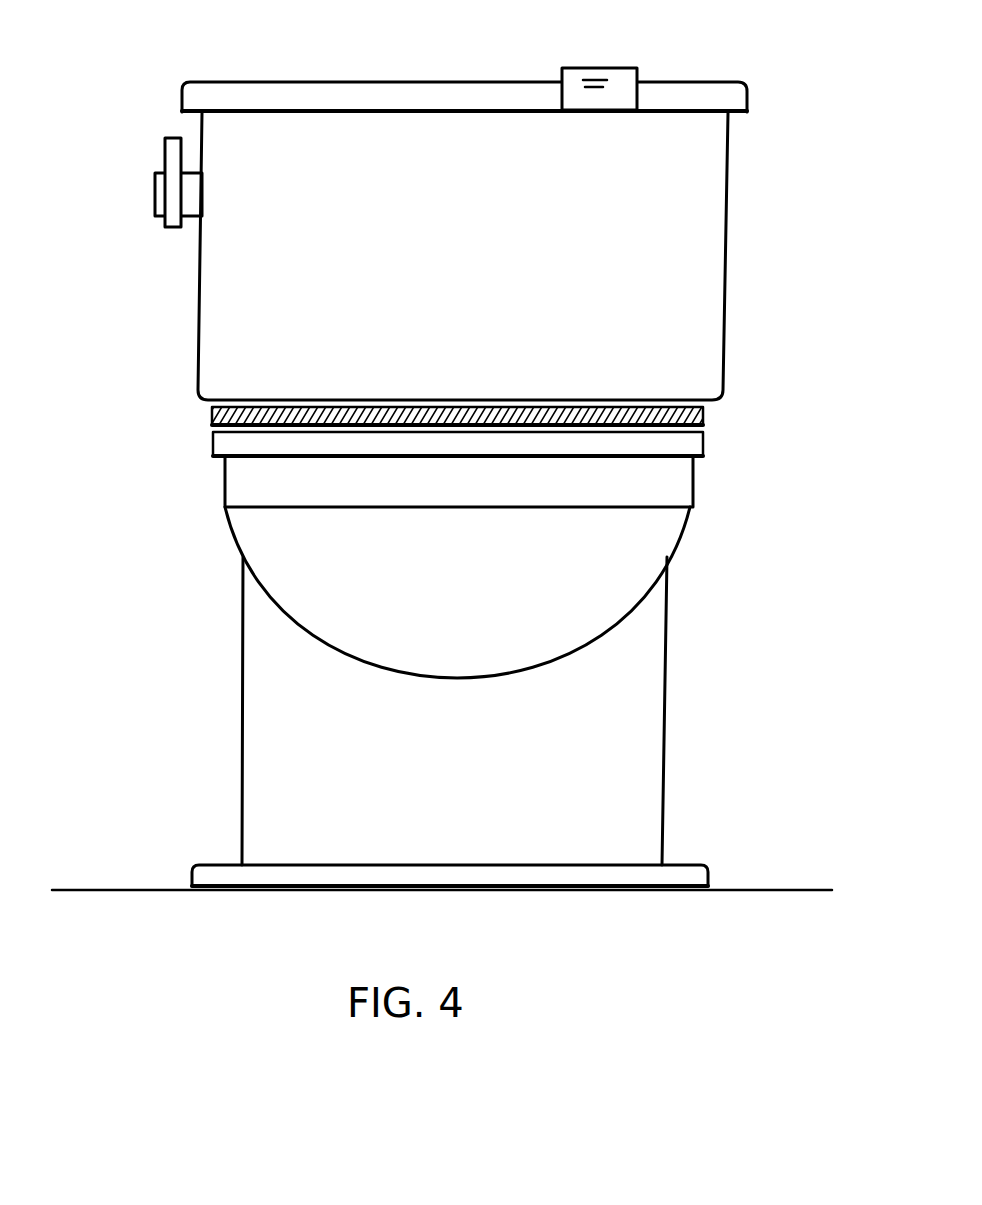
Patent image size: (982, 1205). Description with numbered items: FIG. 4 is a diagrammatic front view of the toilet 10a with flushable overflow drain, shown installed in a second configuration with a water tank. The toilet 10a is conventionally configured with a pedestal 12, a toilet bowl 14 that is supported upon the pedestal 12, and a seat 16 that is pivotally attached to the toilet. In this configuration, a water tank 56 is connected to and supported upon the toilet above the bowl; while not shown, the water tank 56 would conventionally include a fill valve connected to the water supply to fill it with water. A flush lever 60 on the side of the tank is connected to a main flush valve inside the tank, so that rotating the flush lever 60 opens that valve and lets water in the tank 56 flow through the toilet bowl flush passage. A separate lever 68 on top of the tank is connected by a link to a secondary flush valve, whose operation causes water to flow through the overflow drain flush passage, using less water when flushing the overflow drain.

The toilet with flushable overflow drain 10a is at (417, 443).
The pedestal 12 is at (457, 773).
The toilet bowl 14 is at (655, 547).
The seat 16 is at (703, 418).
The water tank 56 is at (707, 227).
The flush lever 60 is at (177, 160).
The lever 68 is at (606, 78).